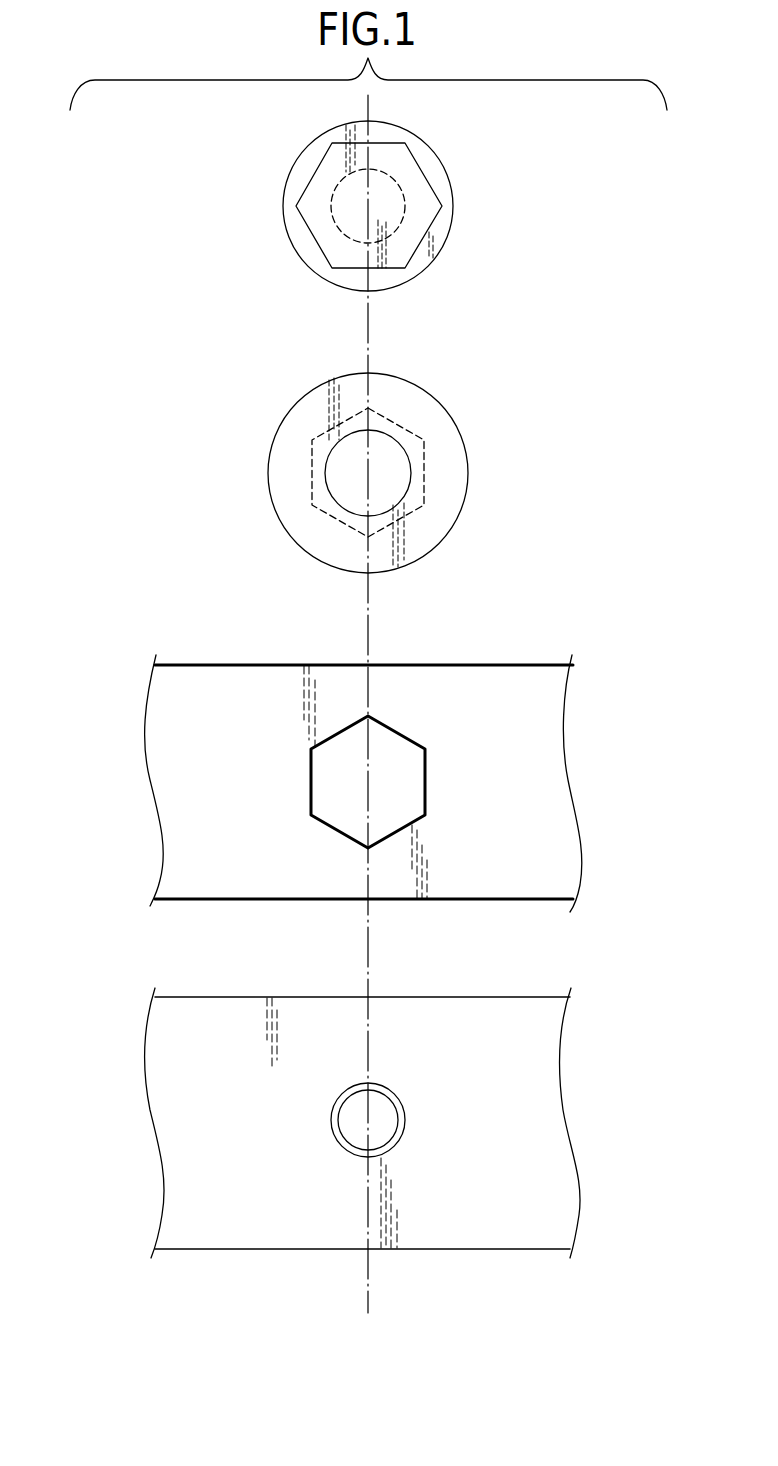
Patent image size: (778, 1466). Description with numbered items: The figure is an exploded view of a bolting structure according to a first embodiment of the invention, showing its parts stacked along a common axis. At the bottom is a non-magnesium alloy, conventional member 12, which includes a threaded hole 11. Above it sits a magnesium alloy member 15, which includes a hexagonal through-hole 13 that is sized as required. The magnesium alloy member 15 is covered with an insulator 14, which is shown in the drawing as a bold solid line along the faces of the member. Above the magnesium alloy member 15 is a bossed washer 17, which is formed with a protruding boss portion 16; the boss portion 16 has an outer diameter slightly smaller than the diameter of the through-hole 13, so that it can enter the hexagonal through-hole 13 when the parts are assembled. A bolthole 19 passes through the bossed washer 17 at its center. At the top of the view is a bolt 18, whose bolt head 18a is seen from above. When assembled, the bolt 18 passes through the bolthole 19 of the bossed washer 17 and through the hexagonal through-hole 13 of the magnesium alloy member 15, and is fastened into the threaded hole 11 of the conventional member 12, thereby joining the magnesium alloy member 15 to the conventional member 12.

The threaded hole 11 is at (391, 1126).
The conventional member 12 is at (150, 1081).
The hexagonal through-hole 13 is at (383, 820).
The insulator 14 is at (231, 665).
The magnesium alloy member 15 is at (150, 758).
The boss portion 16 is at (426, 478).
The bossed washer 17 is at (268, 457).
The bolt 18 is at (454, 207).
The bolt head 18a is at (419, 169).
The bolthole 19 is at (398, 462).